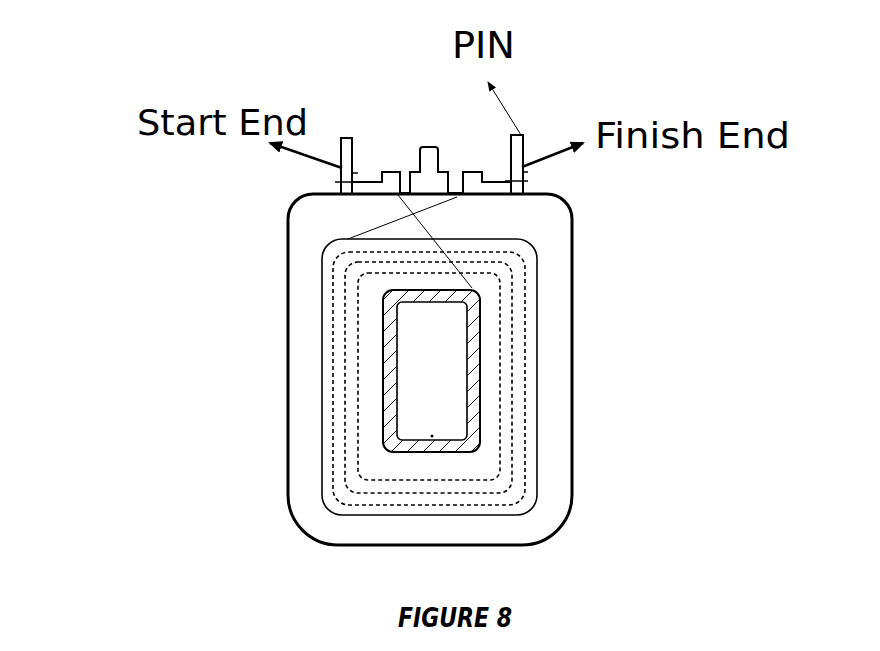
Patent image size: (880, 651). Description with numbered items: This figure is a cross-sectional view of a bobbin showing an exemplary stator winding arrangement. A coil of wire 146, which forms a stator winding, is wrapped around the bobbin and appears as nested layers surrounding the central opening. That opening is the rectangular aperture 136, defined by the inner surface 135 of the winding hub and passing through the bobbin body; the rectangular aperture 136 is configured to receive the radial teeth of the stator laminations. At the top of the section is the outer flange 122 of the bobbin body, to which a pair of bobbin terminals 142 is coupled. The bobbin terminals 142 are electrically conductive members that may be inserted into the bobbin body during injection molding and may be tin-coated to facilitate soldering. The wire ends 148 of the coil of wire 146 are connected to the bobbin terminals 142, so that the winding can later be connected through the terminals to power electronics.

The outer flange 122 is at (547, 248).
The bobbin terminals 142 is at (346, 138).
The wire ends 148 is at (353, 166).
The coil of wire 146 is at (535, 385).
The inner surface 135 is at (393, 385).
The rectangular aperture 136 is at (250, 368).